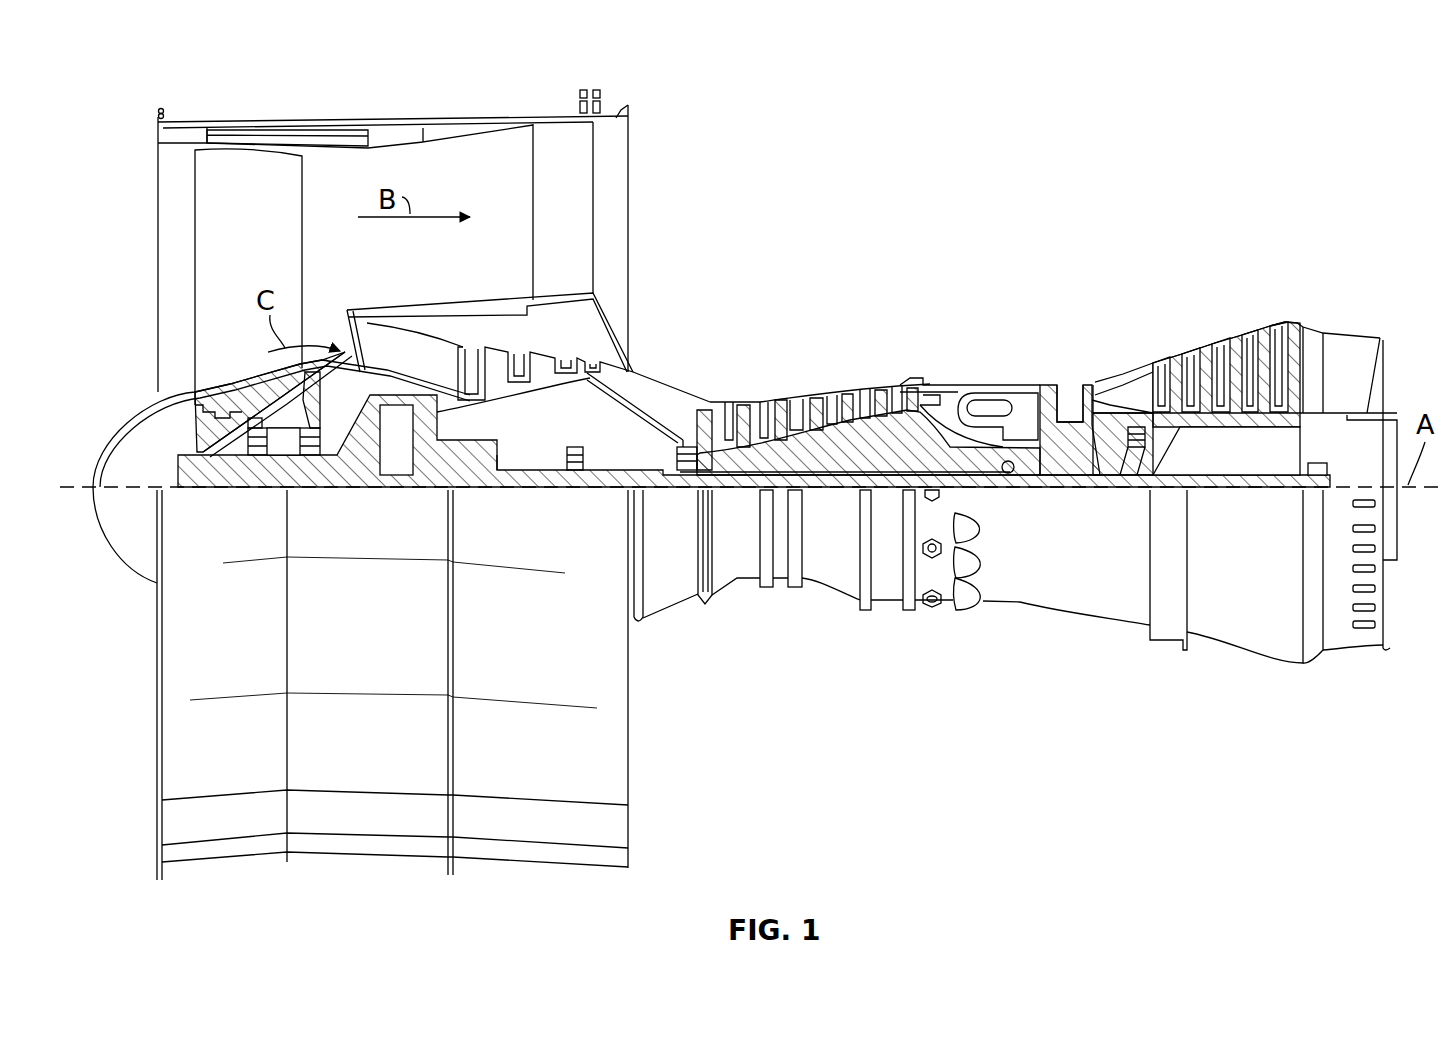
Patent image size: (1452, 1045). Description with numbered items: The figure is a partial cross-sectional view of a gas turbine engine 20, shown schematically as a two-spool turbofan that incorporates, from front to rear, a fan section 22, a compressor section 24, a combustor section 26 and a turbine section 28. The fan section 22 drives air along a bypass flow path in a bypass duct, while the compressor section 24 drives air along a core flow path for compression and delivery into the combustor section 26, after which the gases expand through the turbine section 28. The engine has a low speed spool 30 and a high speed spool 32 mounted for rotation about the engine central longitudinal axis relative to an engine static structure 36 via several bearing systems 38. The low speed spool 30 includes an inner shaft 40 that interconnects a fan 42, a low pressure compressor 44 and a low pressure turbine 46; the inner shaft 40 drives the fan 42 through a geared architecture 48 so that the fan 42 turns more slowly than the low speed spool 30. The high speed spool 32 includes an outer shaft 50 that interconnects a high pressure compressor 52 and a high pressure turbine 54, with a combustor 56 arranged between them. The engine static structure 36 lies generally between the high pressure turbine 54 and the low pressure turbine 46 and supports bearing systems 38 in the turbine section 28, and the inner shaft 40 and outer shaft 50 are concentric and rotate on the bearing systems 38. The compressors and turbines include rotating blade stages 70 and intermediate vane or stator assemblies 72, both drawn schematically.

The gas turbine engine 20 is at (1203, 154).
The fan section 22 is at (265, 110).
The compressor section 24 is at (790, 326).
The combustor section 26 is at (981, 346).
The turbine section 28 is at (1135, 327).
The low speed spool 30 is at (852, 491).
The high speed spool 32 is at (925, 400).
The engine static structure 36 is at (890, 603).
The bearing systems 38 is at (255, 456).
The inner shaft 40 is at (645, 489).
The fan 42 is at (278, 249).
The low pressure compressor 44 is at (587, 313).
The low pressure turbine 46 is at (1240, 345).
The geared architecture 48 is at (395, 458).
The outer shaft 50 is at (1012, 474).
The high pressure compressor 52 is at (796, 427).
The high pressure turbine 54 is at (1068, 400).
The combustor 56 is at (985, 408).
The blade stages 70 is at (475, 360).
The vane or stator assemblies 72 is at (545, 363).